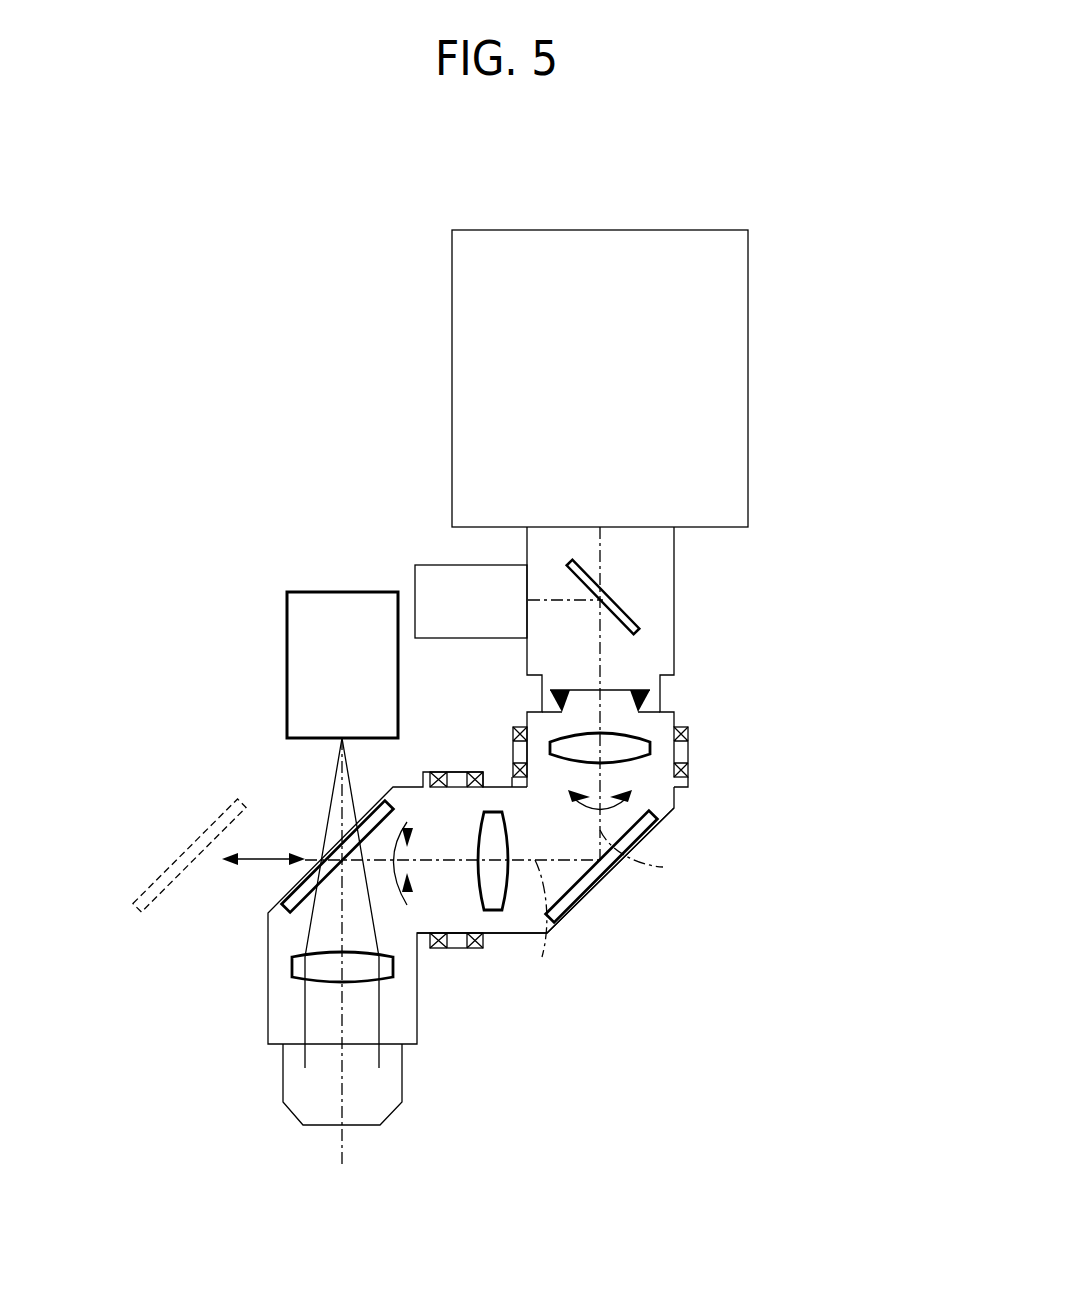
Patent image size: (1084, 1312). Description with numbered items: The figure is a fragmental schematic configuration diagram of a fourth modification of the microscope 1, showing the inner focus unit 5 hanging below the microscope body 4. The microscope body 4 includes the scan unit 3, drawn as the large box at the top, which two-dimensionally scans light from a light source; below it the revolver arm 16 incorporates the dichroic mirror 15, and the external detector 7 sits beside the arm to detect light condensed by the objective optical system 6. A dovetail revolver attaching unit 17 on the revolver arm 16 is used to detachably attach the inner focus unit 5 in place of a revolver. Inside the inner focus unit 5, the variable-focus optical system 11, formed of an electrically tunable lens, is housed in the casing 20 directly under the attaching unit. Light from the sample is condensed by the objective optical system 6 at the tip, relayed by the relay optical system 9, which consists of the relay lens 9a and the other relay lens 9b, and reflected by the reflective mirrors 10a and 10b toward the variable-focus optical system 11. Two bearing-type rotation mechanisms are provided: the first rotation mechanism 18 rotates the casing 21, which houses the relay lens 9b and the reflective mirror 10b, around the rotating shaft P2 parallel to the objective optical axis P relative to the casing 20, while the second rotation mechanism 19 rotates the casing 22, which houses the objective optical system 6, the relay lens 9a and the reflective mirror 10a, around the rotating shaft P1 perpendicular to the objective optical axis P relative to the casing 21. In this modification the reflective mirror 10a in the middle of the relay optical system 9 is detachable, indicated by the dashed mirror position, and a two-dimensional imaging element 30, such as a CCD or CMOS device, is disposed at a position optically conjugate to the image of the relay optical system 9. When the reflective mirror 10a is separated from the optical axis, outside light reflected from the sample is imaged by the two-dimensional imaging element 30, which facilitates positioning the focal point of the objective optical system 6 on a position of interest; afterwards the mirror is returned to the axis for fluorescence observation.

The microscope 1 is at (826, 167).
The scan unit 3 is at (452, 307).
The microscope body 4 is at (770, 346).
The inner focus unit 5 is at (622, 886).
The objective optical system 6 is at (283, 1077).
The external detector 7 is at (432, 563).
The relay optical system 9 is at (284, 932).
The relay lens 9a is at (292, 967).
The relay lens 9b is at (490, 810).
The reflective mirror 10a is at (313, 858).
The reflective mirror 10b is at (580, 908).
The variable-focus optical system 11 is at (637, 762).
The dichroic mirror 15 is at (640, 635).
The revolver arm 16 is at (675, 555).
The revolver attaching unit 17 is at (562, 705).
The first rotation mechanism 18 is at (710, 760).
The second rotation mechanism 19 is at (443, 962).
The casing 20 is at (676, 717).
The casing 21 is at (497, 935).
The casing 22 is at (268, 1010).
The two-dimensional imaging element 30 is at (287, 653).
The objective optical axis P is at (343, 1143).
The rotating shaft P1 is at (540, 924).
The rotating shaft P2 is at (651, 856).